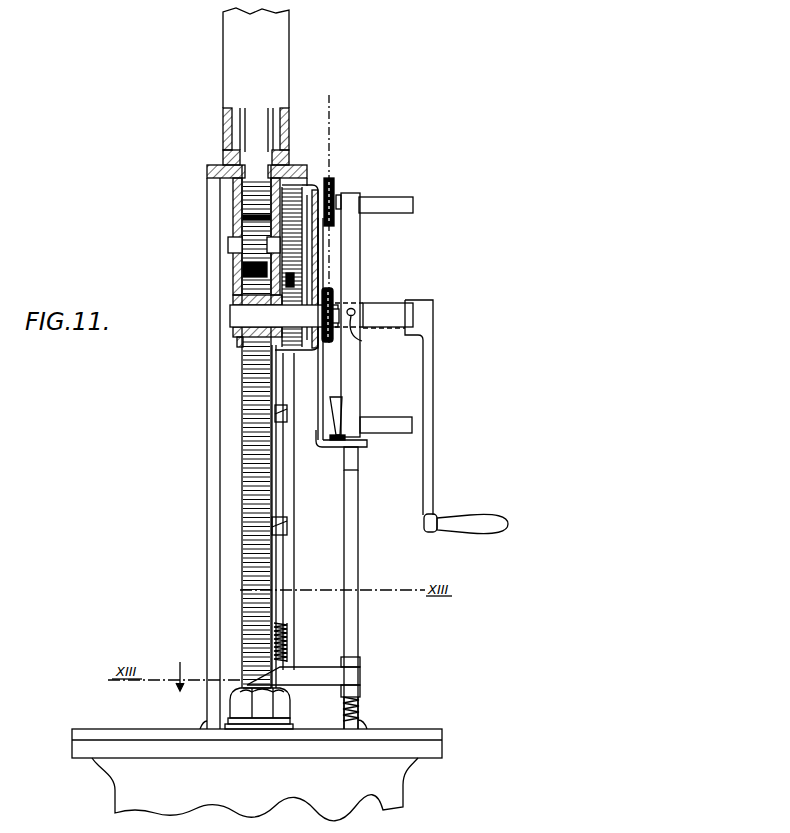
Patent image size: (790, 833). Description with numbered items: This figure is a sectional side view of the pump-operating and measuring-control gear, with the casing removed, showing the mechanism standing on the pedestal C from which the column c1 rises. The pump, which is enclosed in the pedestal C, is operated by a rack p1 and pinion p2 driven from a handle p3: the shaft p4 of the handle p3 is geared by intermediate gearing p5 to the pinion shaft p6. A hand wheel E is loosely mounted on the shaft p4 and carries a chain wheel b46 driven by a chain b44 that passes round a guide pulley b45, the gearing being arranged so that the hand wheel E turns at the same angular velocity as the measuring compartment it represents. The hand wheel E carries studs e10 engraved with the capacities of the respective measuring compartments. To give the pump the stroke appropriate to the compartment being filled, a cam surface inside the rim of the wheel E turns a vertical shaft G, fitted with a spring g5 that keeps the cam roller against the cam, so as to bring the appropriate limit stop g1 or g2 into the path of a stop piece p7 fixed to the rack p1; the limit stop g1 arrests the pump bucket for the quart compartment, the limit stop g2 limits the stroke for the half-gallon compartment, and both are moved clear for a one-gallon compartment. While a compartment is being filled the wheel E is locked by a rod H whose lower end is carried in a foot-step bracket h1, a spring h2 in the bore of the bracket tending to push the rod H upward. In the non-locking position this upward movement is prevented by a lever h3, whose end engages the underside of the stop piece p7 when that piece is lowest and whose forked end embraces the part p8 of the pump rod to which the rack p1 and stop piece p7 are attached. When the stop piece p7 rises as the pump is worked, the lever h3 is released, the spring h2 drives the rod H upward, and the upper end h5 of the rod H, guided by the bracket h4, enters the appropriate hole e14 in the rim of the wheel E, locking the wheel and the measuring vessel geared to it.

The column c1 is at (238, 64).
The pinion p2 is at (247, 270).
The rack p1 is at (252, 508).
The pinion shaft p6 is at (236, 245).
The intermediate gearing p5 is at (296, 292).
The shaft p4 is at (242, 318).
The chain b44 is at (332, 97).
The guide pulley b45 is at (334, 183).
The chain wheel b46 is at (340, 300).
The hand wheel E is at (354, 378).
The bracket h4 is at (314, 446).
The studs e10 is at (414, 205).
The hole e14 is at (356, 336).
The upper end h5 is at (352, 433).
The handle p3 is at (433, 423).
The limit stop g1 is at (282, 415).
The vertical shaft G is at (290, 555).
The limit stop g2 is at (285, 528).
The spring g5 is at (283, 642).
The rod H is at (360, 548).
The lever h3 is at (352, 675).
The foot-step bracket h1 is at (362, 712).
The spring h2 is at (352, 724).
The stop piece p7 is at (255, 672).
The part of the pump rod p8 is at (268, 692).
The pedestal C is at (122, 786).